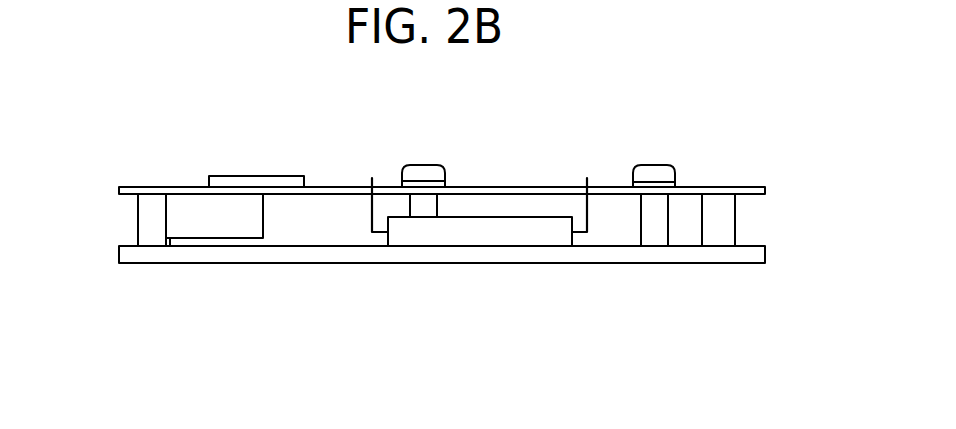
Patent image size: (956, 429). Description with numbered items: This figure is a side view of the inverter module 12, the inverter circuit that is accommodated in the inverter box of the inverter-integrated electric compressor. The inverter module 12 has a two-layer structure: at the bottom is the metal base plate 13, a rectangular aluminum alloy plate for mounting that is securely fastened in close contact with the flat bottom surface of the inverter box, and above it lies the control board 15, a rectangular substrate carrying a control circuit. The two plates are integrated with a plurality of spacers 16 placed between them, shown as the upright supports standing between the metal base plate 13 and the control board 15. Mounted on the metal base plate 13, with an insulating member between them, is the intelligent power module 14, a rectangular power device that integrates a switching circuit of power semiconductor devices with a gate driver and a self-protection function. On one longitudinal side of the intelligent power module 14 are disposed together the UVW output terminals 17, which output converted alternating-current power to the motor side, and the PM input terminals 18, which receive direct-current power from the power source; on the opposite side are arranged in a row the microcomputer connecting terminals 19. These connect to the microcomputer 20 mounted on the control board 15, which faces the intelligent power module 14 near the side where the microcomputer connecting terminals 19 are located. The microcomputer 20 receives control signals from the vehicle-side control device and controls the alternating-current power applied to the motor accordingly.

The inverter module 12 is at (193, 134).
The metal base plate 13 is at (323, 253).
The intelligent power module 14 is at (474, 232).
The control board 15 is at (507, 187).
The spacer 16 is at (150, 218).
The UVW output terminal 17 is at (617, 168).
The PM input terminal 18 is at (590, 185).
The microcomputer connecting terminal 19 is at (368, 183).
The microcomputer 20 is at (262, 182).